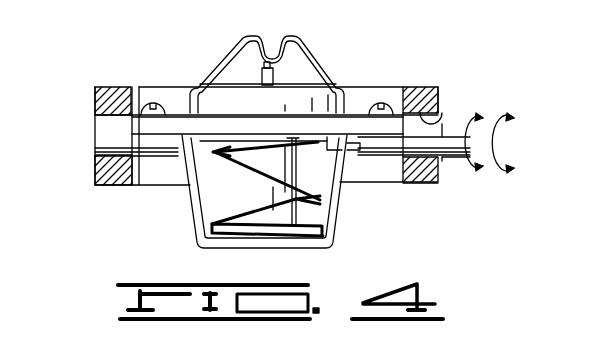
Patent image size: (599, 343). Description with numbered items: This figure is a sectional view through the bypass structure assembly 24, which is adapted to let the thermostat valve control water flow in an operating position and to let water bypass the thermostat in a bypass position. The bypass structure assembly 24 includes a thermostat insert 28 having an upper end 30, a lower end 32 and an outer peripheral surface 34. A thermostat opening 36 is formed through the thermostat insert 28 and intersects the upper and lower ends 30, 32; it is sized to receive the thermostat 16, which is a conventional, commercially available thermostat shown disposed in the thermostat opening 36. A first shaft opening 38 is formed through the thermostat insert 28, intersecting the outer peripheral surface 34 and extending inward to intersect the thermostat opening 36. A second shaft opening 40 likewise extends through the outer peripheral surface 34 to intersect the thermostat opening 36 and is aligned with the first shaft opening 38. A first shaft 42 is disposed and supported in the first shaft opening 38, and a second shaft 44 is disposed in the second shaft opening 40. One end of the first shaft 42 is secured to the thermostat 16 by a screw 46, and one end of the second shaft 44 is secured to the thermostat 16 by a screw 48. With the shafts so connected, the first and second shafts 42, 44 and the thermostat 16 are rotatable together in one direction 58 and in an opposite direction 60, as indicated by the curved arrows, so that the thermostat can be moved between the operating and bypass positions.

The thermostat 16 is at (317, 41).
The bypass structure assembly 24 is at (110, 86).
The thermostat insert 28 is at (439, 92).
The upper end 30 is at (412, 87).
The lower end 32 is at (421, 183).
The outer peripheral surface 34 is at (439, 178).
The thermostat opening 36 is at (141, 86).
The first shaft opening 38 is at (443, 116).
The second shaft opening 40 is at (110, 151).
The first shaft 42 is at (426, 184).
The second shaft 44 is at (128, 156).
The screw 46 is at (378, 106).
The screw 48 is at (153, 103).
The one direction 58 is at (458, 165).
The opposite direction 60 is at (490, 135).